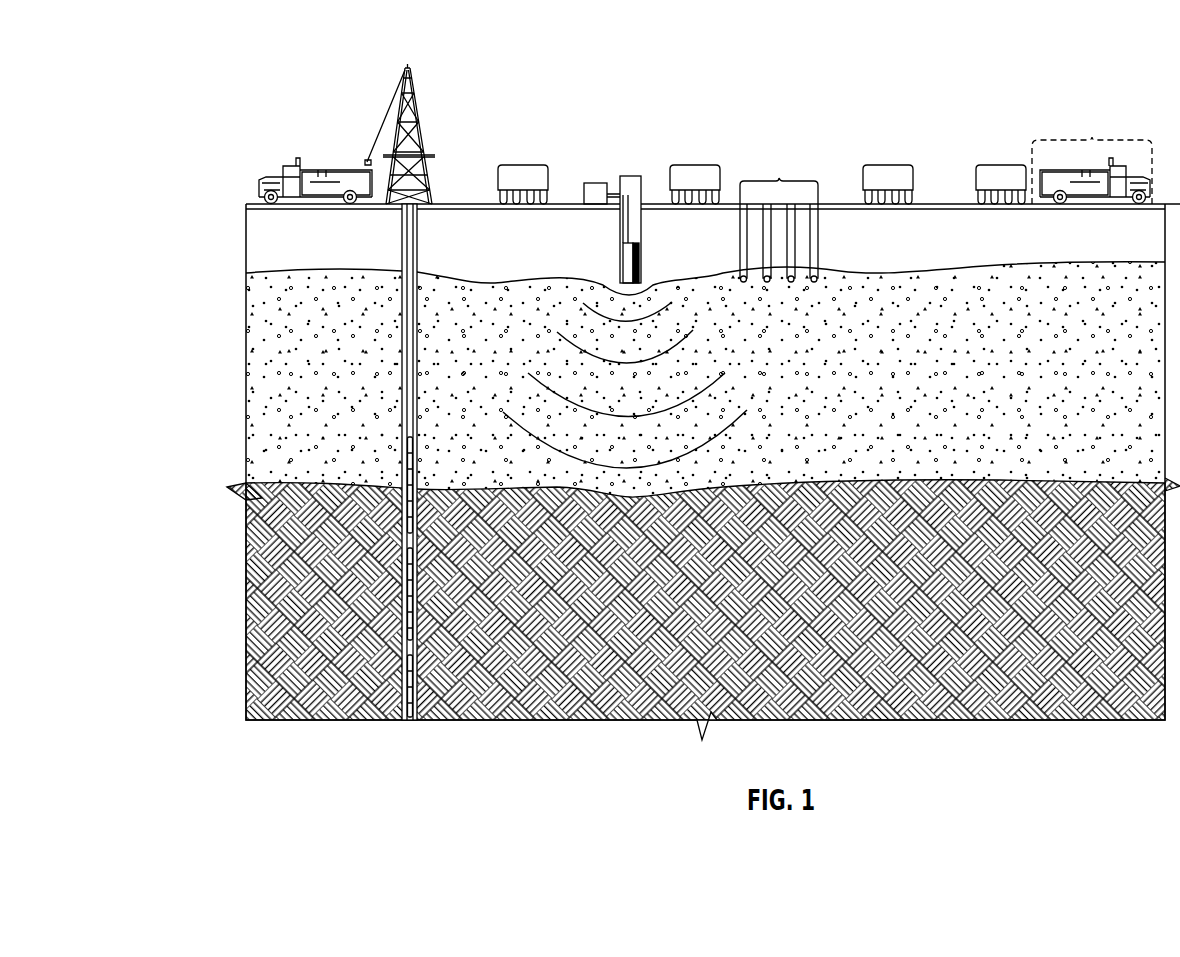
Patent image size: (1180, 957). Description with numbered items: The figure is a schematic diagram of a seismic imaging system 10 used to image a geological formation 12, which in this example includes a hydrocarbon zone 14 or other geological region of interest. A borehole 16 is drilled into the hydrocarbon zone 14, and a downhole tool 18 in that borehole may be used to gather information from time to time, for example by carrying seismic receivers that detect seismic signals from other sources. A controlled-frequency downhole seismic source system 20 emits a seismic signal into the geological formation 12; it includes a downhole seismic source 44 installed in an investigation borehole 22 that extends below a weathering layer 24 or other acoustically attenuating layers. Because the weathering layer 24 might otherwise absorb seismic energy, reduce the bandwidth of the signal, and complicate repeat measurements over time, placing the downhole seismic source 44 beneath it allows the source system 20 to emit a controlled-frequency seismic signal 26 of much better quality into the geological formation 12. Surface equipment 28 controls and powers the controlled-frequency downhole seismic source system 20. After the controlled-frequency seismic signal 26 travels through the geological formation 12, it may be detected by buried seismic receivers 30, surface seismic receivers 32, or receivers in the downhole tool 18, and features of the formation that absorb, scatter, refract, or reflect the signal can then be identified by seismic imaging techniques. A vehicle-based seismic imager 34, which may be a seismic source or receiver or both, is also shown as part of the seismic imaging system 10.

The seismic imaging system 10 is at (377, 51).
The geological formation 12 is at (471, 376).
The hydrocarbon zone 14 is at (228, 601).
The borehole 16 is at (400, 264).
The downhole tool 18 is at (402, 464).
The controlled-frequency downhole seismic source system 20 is at (632, 176).
The investigation borehole 22 is at (643, 257).
The weathering layer 24 is at (715, 278).
The controlled-frequency seismic signal 26 is at (541, 365).
The surface equipment 28 is at (596, 183).
The buried seismic receivers 30 is at (780, 180).
The surface seismic receivers 32 is at (523, 165).
The vehicle-based seismic imager 34 is at (1092, 140).
The downhole seismic source 44 is at (627, 263).